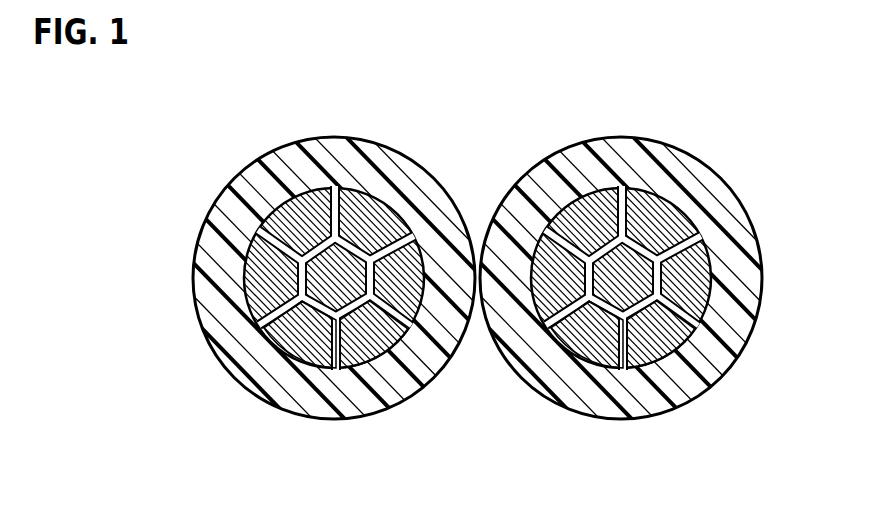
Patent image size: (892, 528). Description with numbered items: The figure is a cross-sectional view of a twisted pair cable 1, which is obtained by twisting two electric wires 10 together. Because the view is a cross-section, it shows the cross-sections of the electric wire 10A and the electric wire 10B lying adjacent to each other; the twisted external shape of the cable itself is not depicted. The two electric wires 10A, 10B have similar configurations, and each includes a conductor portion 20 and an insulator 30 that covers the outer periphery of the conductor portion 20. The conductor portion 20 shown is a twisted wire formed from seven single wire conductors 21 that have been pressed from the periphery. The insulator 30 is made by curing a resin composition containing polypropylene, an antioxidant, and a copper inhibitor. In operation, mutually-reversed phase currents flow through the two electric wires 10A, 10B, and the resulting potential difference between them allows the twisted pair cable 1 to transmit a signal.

The twisted pair cable 1 is at (640, 53).
The electric wire 10 is at (477, 236).
The electric wire 10A is at (393, 148).
The electric wire 10B is at (563, 148).
The conductor portion 20 is at (402, 468).
The single wire conductor 21 is at (303, 343).
The insulator 30 is at (427, 353).